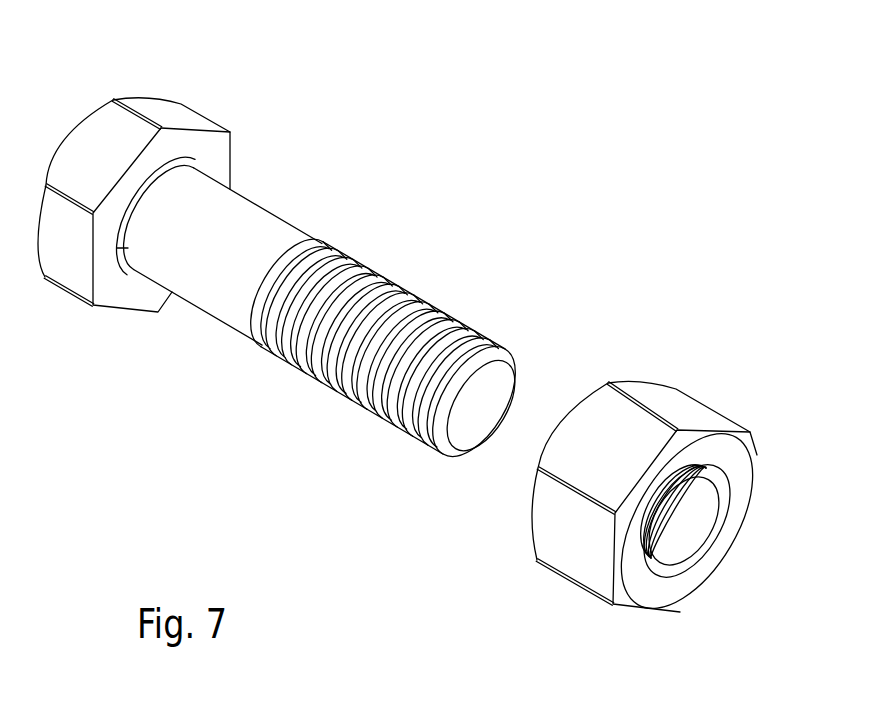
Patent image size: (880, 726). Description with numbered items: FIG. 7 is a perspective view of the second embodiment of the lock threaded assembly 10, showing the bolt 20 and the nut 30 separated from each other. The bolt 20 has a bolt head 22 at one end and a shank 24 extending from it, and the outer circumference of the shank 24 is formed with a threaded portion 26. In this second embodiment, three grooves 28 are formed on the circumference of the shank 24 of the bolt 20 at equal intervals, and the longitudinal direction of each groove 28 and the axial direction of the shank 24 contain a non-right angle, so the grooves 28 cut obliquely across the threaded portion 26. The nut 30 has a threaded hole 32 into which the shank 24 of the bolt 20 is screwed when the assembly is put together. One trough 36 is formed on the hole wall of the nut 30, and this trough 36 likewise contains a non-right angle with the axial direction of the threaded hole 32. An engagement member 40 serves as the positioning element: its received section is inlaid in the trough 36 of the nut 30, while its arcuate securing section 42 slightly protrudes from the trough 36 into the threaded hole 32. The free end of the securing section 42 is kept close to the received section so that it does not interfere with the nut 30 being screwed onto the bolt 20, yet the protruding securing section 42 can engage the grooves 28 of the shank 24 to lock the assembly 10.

The lock threaded assembly 10 is at (643, 157).
The bolt 20 is at (397, 167).
The bolt head 22 is at (95, 145).
The shank 24 is at (247, 218).
The threaded portion 26 is at (397, 290).
The groove 28 is at (423, 302).
The nut 30 is at (722, 387).
The threaded hole 32 is at (665, 552).
The trough 36 is at (677, 477).
The engagement member 40 is at (713, 500).
The securing section 42 is at (712, 505).